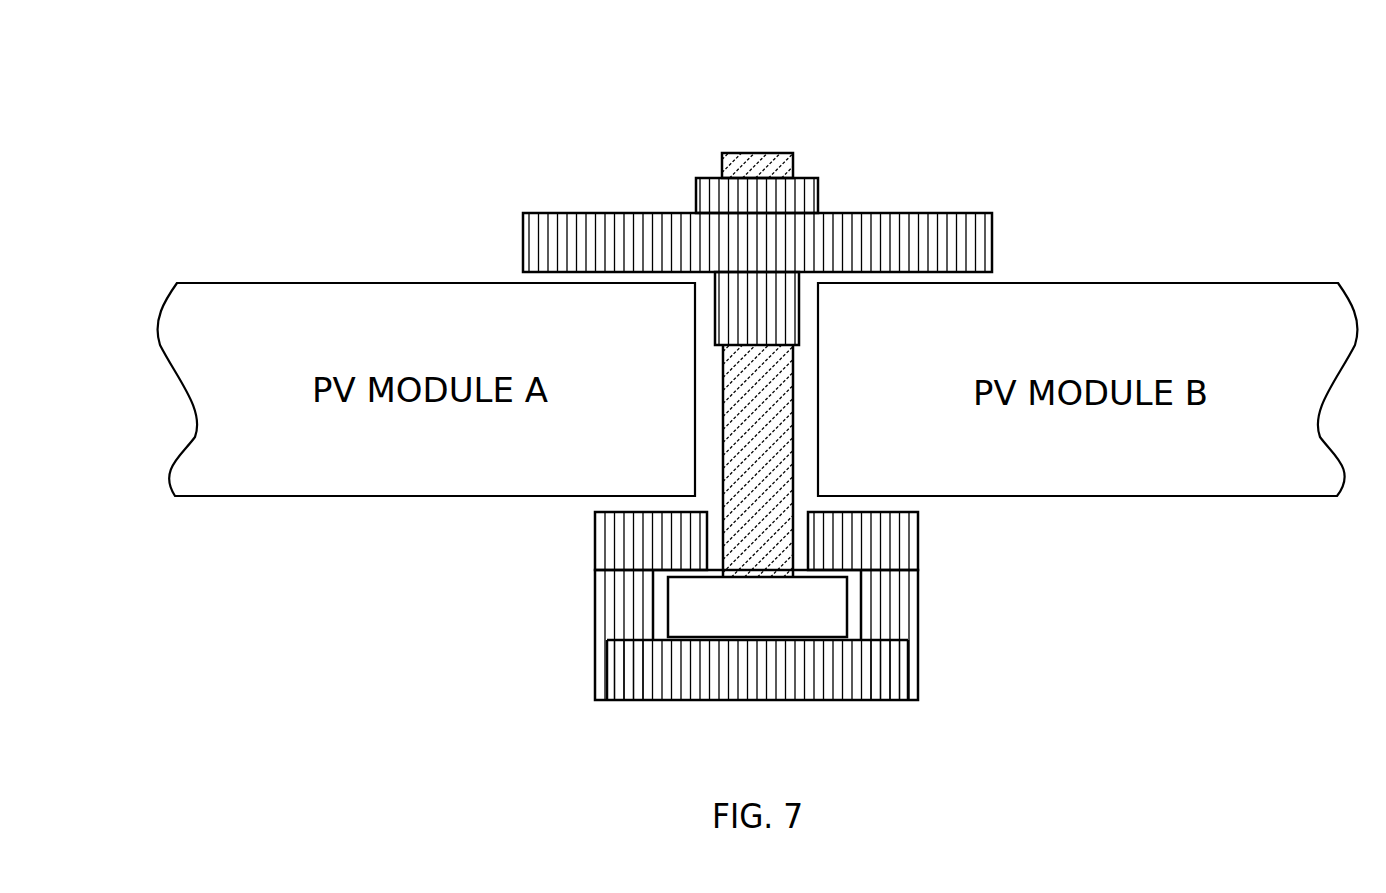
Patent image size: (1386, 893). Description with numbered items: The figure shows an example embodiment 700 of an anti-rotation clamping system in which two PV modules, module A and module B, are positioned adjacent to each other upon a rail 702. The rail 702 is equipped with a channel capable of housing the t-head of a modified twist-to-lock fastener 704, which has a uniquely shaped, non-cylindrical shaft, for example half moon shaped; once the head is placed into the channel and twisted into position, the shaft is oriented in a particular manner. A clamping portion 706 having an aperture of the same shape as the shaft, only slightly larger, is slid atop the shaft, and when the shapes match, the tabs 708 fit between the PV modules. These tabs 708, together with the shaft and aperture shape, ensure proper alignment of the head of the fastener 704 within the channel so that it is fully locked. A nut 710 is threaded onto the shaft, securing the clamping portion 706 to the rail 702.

The example embodiment 700 is at (1038, 73).
The rail 702 is at (918, 608).
The modified twist-to-lock fastener 704 is at (758, 153).
The clamping portion 706 is at (993, 241).
The tabs 708 is at (800, 307).
The nut 710 is at (819, 195).